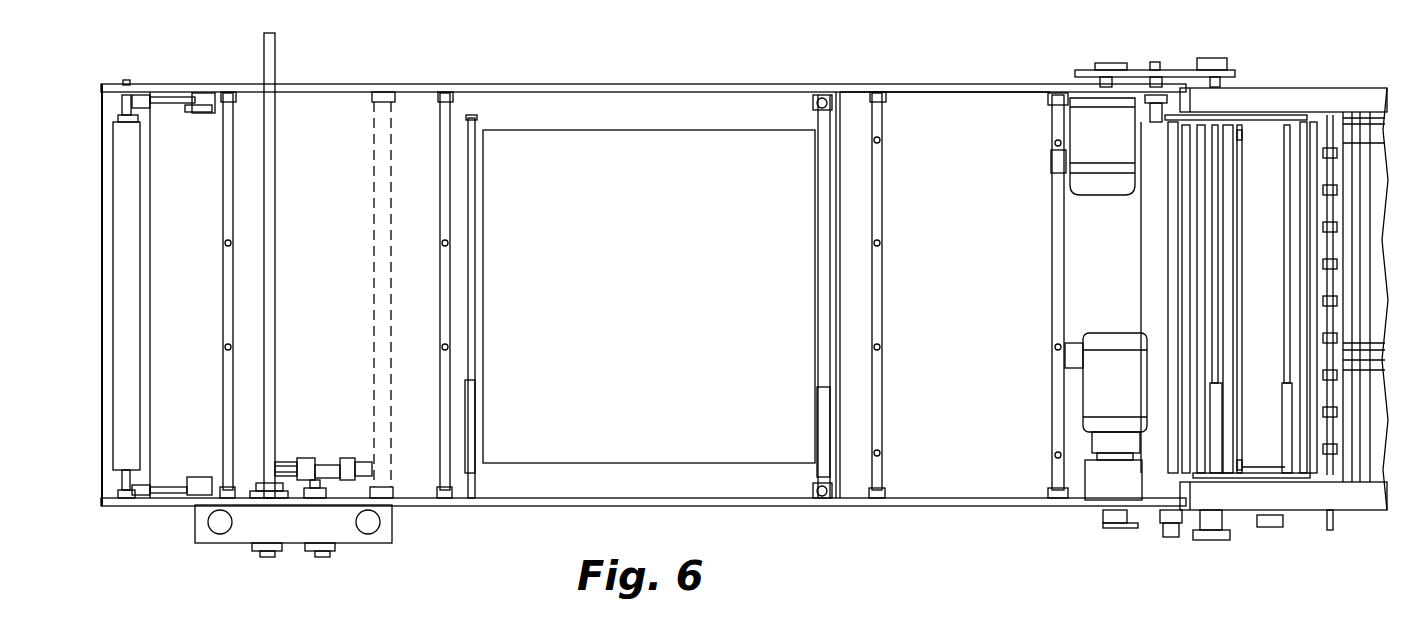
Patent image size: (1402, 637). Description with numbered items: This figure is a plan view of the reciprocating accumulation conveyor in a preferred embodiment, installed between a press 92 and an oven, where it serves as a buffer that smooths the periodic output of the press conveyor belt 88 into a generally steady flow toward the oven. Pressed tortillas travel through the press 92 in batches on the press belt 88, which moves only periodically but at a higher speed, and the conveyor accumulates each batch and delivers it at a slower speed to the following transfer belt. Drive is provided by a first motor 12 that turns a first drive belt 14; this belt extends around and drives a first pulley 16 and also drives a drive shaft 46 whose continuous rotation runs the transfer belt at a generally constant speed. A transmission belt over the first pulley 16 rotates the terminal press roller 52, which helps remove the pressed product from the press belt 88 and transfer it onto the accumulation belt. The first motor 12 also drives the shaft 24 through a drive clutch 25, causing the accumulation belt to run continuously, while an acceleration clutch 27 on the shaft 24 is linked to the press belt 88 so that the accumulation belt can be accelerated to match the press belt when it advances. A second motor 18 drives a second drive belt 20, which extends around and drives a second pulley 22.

The first motor 12 is at (1098, 395).
The first drive belt 14 is at (1137, 528).
The first pulley 16 is at (1215, 540).
The second motor 18 is at (1087, 132).
The second drive belt 20 is at (1130, 70).
The second pulley 22 is at (1240, 76).
The shaft 24 is at (1332, 120).
The drive clutch 25 is at (1100, 522).
The acceleration clutch 27 is at (1085, 64).
The drive shaft 46 is at (1330, 470).
The terminal press roller 52 is at (1177, 537).
The press conveyor belt 88 is at (912, 115).
The press 92 is at (656, 230).